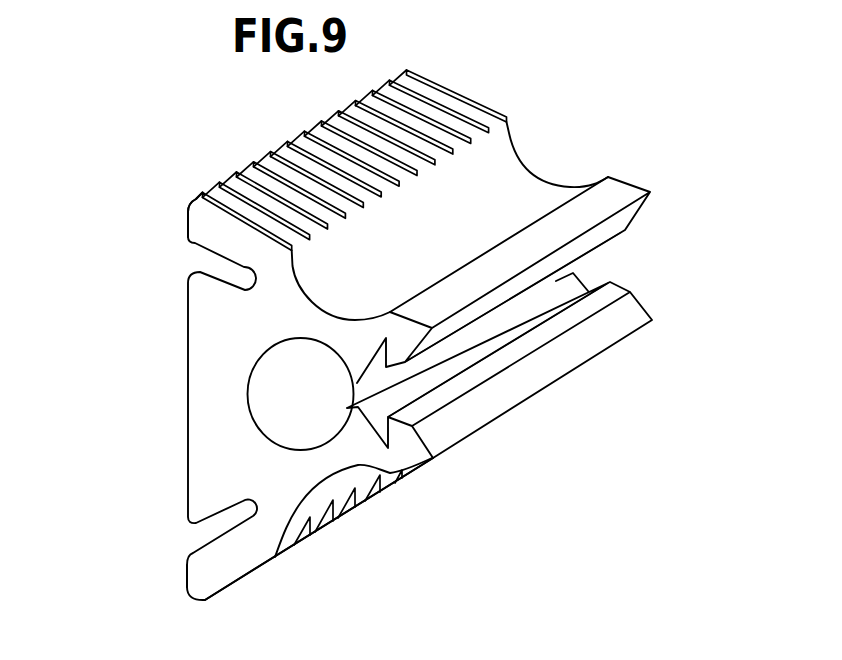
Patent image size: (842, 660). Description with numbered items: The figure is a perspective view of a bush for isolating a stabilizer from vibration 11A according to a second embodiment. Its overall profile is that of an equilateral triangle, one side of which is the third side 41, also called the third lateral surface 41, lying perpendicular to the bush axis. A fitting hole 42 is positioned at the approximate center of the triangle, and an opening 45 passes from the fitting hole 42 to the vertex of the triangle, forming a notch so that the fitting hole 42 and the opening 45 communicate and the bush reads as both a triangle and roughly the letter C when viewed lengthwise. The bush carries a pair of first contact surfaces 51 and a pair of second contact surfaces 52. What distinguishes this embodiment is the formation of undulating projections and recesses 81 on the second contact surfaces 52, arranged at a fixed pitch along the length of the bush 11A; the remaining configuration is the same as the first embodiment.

The bush for isolating a stabilizer from vibration 11A is at (147, 325).
The third side 41 is at (187, 428).
The fitting hole 42 is at (267, 428).
The second contact surfaces 52 is at (243, 221).
The projections and recesses 81 is at (415, 121).
The first contact surfaces 51 is at (618, 194).
The opening 45 is at (612, 256).